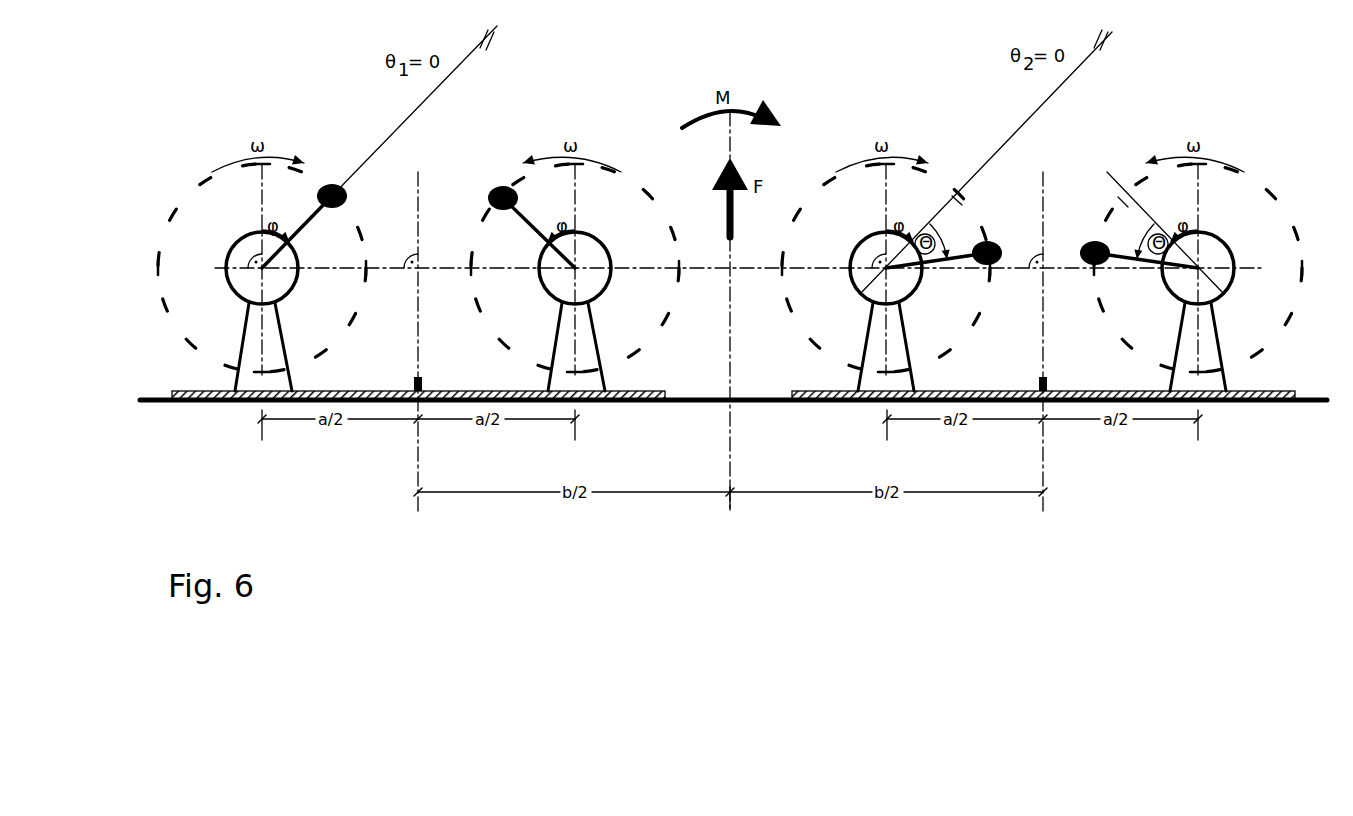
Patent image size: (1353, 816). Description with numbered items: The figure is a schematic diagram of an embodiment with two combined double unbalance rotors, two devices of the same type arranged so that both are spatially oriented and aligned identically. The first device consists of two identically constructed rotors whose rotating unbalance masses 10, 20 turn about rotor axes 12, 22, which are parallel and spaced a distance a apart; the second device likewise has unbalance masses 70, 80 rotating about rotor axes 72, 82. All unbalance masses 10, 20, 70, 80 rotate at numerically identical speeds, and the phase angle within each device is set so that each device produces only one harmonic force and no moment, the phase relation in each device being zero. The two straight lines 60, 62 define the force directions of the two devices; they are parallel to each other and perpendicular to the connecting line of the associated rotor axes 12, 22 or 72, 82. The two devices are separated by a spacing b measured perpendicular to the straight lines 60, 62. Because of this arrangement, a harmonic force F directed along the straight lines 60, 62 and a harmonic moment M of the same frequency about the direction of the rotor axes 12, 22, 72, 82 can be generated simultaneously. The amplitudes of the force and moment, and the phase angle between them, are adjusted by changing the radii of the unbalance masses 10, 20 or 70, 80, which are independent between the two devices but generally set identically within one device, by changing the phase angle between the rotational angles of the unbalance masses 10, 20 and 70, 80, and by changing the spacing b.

The unbalance mass 10 is at (335, 181).
The rotor axis 12 is at (262, 268).
The unbalance mass 20 is at (498, 182).
The rotor axis 22 is at (575, 268).
The straight line 60 is at (417, 337).
The straight line 62 is at (1041, 347).
The unbalance mass 70 is at (990, 239).
The rotor axis 72 is at (886, 268).
The unbalance mass 80 is at (1100, 230).
The rotor axis 82 is at (1198, 268).